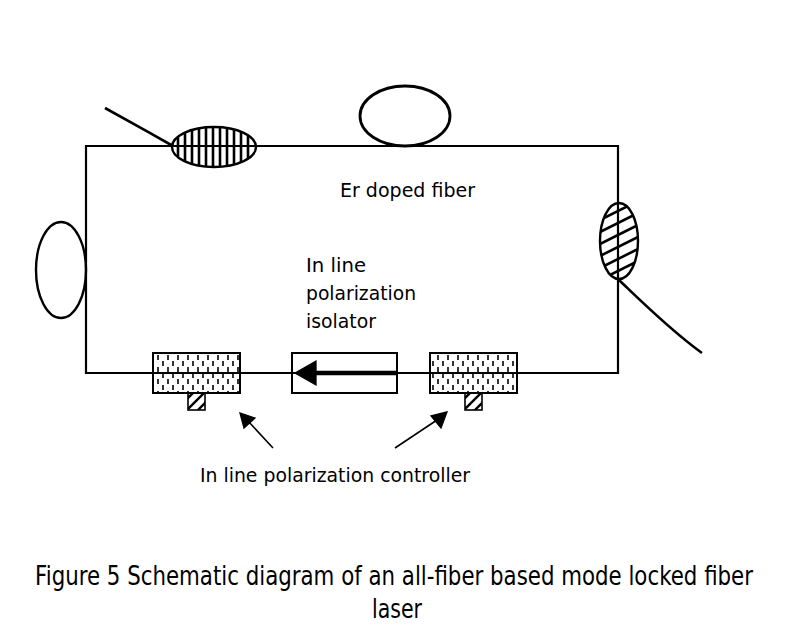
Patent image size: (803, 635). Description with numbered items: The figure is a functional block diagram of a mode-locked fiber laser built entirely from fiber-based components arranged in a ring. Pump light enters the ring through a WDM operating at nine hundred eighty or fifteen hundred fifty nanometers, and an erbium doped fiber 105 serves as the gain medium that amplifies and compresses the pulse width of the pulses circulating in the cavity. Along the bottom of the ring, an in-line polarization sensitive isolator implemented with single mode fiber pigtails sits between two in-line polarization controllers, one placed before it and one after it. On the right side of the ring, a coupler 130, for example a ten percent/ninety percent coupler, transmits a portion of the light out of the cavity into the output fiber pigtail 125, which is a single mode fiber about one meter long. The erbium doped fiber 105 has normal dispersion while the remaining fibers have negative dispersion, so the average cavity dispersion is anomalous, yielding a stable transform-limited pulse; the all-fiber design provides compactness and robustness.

The erbium doped fiber 105 is at (423, 113).
The output fiber pigtail 125 is at (685, 345).
The output coupler 130 is at (630, 212).